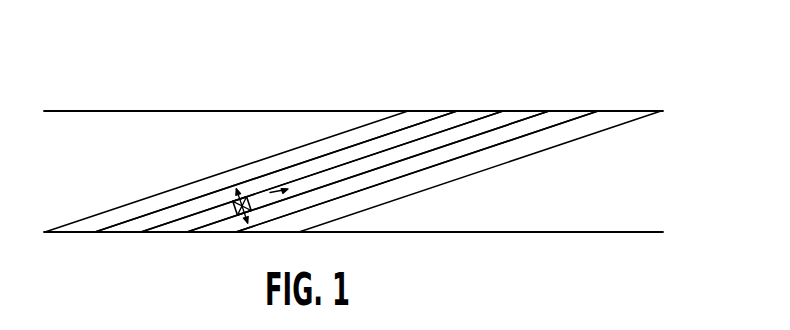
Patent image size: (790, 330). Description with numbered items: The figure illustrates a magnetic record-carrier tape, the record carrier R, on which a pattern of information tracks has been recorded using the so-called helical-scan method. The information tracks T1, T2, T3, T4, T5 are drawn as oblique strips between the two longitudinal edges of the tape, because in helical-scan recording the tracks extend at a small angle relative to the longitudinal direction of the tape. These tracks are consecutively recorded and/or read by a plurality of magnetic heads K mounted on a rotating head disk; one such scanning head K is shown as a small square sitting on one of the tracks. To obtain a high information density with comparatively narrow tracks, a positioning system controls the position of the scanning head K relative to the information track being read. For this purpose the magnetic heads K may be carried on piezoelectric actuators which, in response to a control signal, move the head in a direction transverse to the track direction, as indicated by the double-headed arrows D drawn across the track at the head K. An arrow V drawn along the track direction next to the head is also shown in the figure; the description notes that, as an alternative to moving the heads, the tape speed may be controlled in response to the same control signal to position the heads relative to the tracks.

The record carrier R is at (101, 161).
The information track T1 is at (618, 110).
The information track T2 is at (573, 110).
The information track T3 is at (523, 110).
The information track T4 is at (475, 110).
The information track T5 is at (432, 110).
The magnetic head K is at (233, 201).
The arrows indicating transverse head movement D is at (236, 189).
The direction of movement V is at (279, 191).